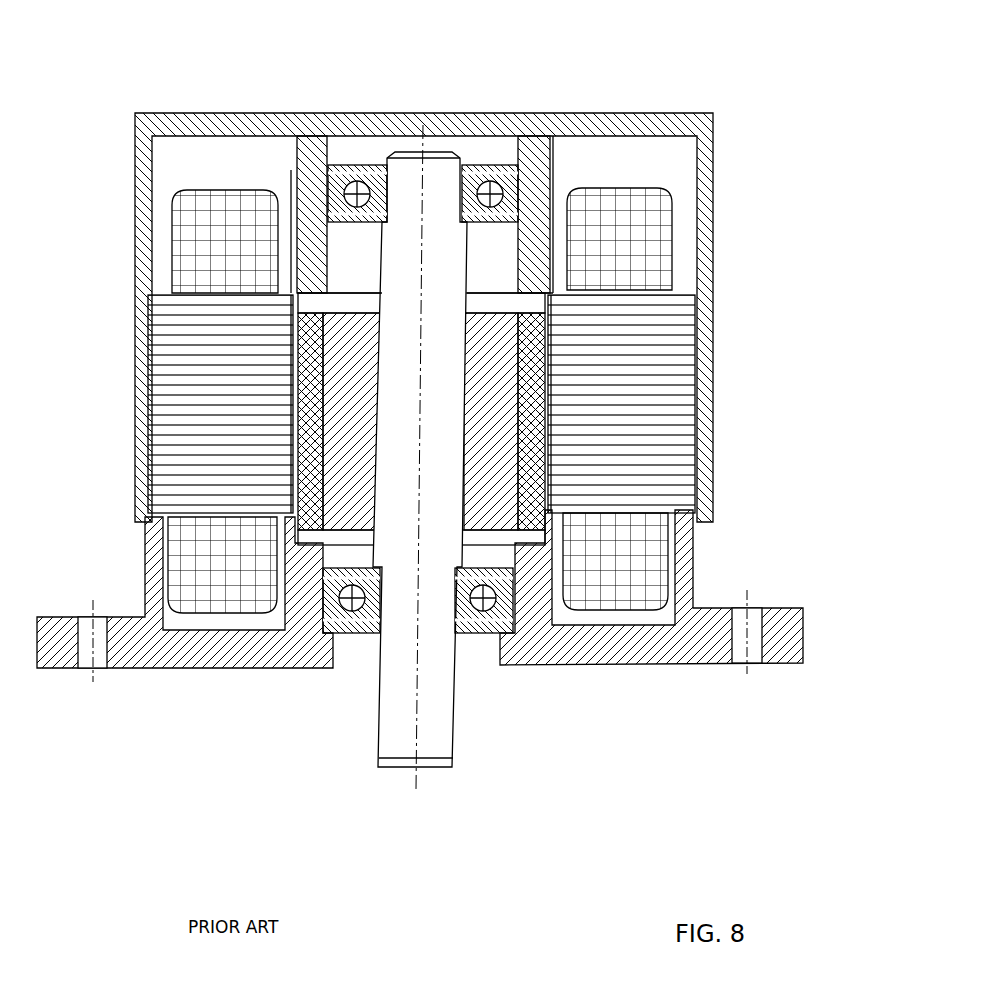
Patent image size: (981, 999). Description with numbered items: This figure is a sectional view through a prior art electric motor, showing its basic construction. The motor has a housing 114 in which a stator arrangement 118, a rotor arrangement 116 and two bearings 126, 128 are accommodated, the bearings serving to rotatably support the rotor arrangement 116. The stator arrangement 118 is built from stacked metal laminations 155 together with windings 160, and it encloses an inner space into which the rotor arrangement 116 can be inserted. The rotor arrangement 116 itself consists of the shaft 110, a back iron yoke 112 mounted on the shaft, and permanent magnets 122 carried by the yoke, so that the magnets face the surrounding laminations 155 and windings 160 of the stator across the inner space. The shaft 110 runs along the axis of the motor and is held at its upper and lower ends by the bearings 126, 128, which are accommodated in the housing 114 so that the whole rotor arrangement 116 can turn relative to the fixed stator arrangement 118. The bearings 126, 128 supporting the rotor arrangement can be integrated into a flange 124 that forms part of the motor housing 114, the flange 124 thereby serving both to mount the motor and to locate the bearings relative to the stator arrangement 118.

The shaft 110 is at (428, 700).
The back iron yoke 112 is at (490, 473).
The housing 114 is at (628, 115).
The rotor arrangement 116 is at (347, 280).
The stator arrangement 118 is at (202, 157).
The permanent magnets 122 is at (578, 388).
The flange 124 is at (191, 672).
The bearing 126 is at (500, 197).
The bearing 128 is at (505, 603).
The stacked metal laminations 155 is at (682, 297).
The windings 160 is at (630, 250).